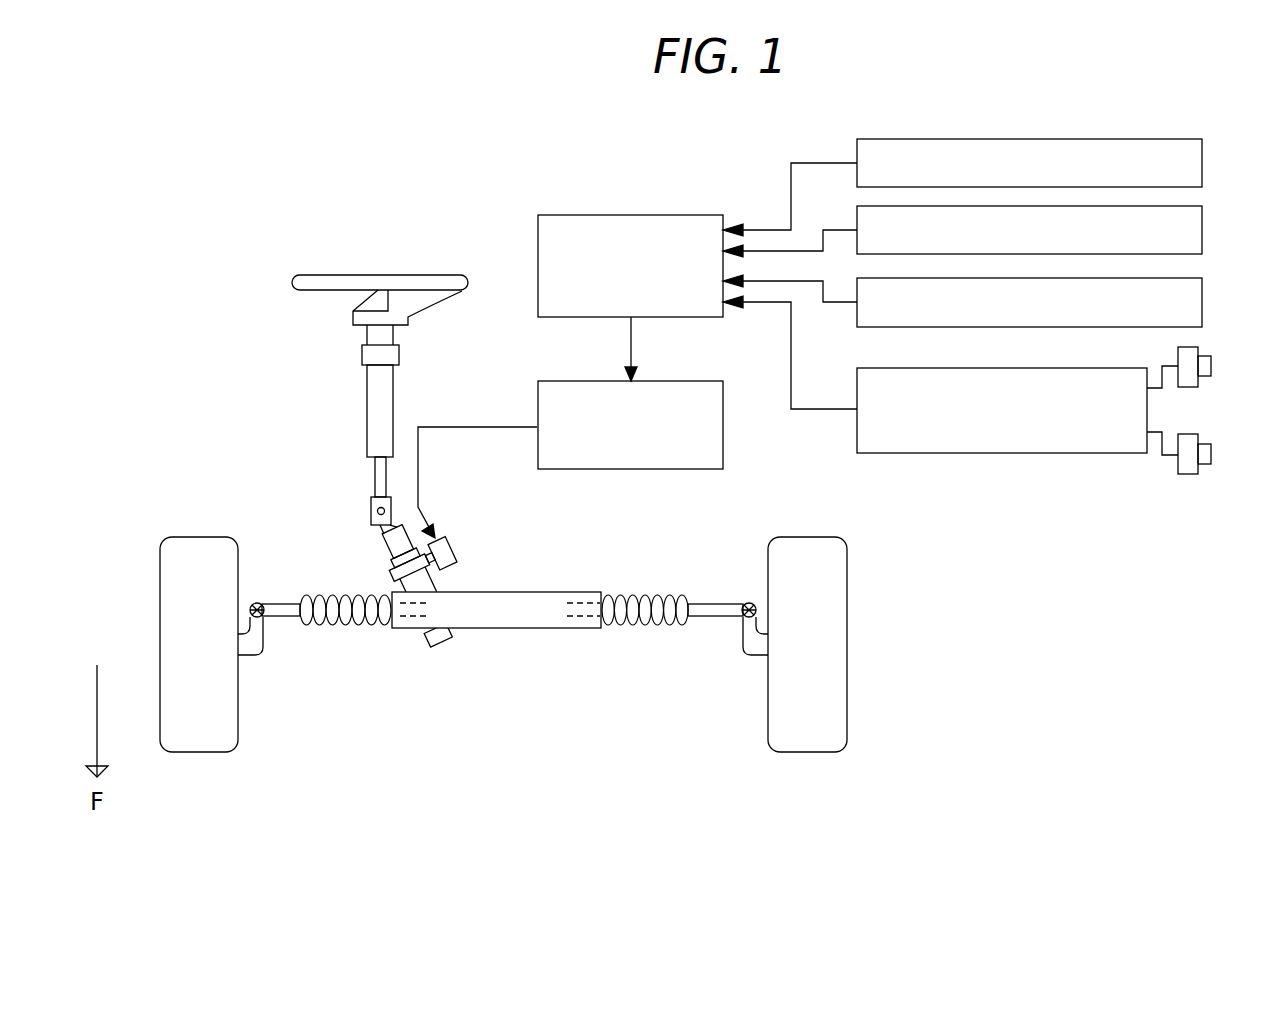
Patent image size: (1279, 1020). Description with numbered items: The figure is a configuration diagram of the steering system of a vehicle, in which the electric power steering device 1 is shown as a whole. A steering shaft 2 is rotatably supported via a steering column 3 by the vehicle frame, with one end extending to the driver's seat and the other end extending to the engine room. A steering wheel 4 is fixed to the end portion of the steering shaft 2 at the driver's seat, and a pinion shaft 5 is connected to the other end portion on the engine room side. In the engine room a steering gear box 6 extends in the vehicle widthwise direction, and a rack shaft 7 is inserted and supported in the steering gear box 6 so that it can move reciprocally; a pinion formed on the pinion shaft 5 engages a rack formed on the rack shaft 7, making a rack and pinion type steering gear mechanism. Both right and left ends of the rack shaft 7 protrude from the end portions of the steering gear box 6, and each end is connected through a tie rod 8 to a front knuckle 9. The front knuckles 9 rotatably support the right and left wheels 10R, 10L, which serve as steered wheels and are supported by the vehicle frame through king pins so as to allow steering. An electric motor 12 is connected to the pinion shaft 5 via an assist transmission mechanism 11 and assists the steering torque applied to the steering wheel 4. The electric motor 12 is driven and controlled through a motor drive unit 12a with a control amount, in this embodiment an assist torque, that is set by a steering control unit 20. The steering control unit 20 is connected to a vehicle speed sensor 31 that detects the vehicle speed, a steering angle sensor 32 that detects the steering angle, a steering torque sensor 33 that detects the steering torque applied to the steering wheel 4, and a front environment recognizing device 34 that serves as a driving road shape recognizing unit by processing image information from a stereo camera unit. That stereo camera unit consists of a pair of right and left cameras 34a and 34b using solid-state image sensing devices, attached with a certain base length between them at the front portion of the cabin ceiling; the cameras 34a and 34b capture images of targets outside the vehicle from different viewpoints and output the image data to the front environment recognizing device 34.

The electric power steering device 1 is at (286, 428).
The steering shaft 2 is at (376, 478).
The steering column 3 is at (378, 410).
The steering wheel 4 is at (376, 284).
The pinion shaft 5 is at (392, 542).
The steering gear box 6 is at (492, 616).
The rack shaft 7 is at (578, 602).
The tie rod 8 is at (287, 612).
The front knuckle 9 is at (248, 657).
The right wheel 10R is at (200, 755).
The left wheel 10L is at (805, 755).
The assist transmission mechanism 11 is at (392, 582).
The electric motor 12 is at (456, 553).
The motor drive unit 12a is at (680, 380).
The steering control unit 20 is at (680, 214).
The vehicle speed sensor 31 is at (1203, 163).
The steering angle sensor 32 is at (1203, 232).
The steering torque sensor 33 is at (1203, 303).
The front environment recognizing device 34 is at (1072, 455).
The camera 34a is at (1211, 366).
The camera 34b is at (1211, 452).